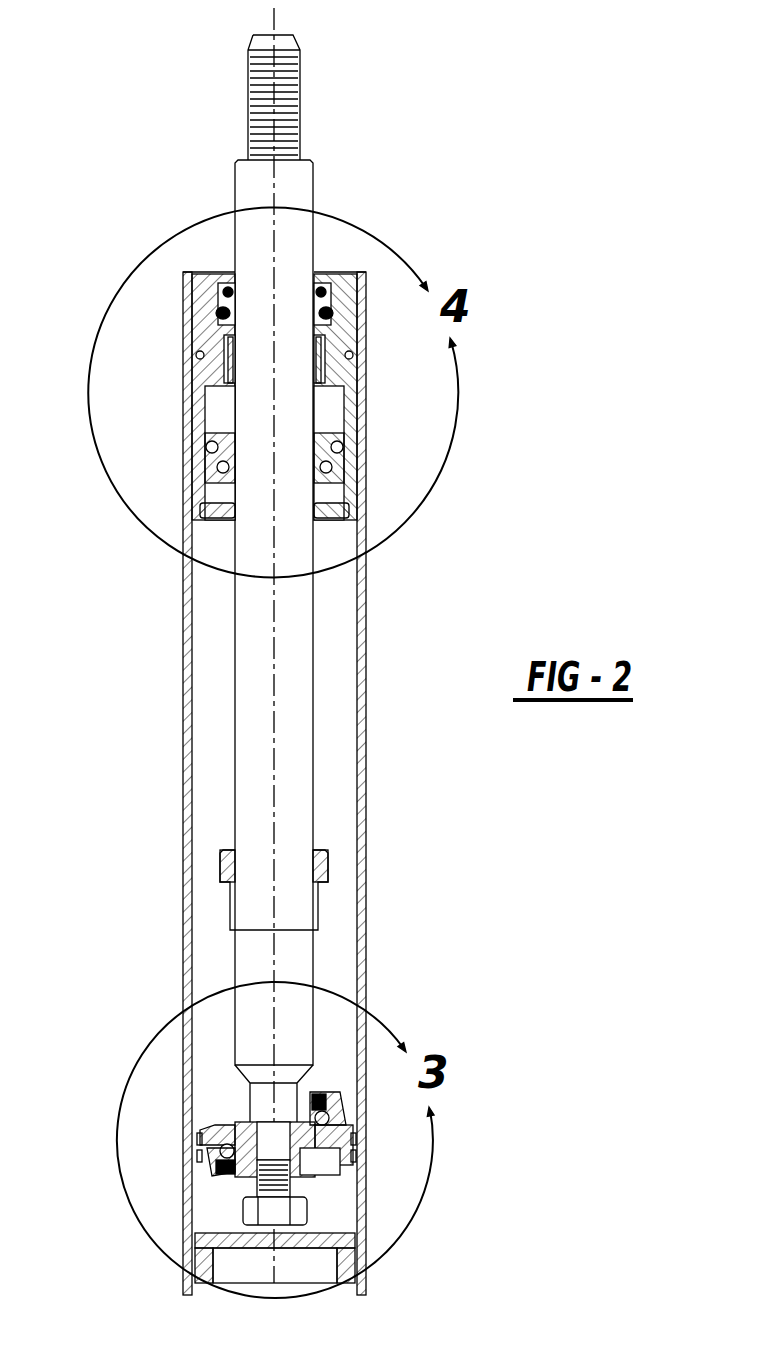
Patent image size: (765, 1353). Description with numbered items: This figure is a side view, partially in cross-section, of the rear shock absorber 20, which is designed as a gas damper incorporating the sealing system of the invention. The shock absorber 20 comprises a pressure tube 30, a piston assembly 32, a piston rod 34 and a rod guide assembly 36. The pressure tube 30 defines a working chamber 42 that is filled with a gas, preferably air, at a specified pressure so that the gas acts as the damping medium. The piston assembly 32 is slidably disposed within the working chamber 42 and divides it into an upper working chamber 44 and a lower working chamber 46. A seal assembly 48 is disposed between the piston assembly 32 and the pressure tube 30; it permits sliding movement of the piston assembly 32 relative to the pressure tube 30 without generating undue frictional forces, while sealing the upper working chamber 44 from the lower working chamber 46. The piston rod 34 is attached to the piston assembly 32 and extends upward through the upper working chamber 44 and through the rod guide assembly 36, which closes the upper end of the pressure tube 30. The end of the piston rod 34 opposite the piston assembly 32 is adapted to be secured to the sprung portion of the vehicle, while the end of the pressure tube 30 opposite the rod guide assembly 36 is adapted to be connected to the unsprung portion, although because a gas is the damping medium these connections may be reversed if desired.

The rear shock absorber 20 is at (506, 189).
The pressure tube 30 is at (367, 908).
The piston assembly 32 is at (350, 1132).
The piston rod 34 is at (292, 627).
The rod guide assembly 36 is at (347, 375).
The working chamber 42 is at (218, 713).
The upper working chamber 44 is at (213, 600).
The lower working chamber 46 is at (210, 1203).
The seal assembly 48 is at (197, 1137).